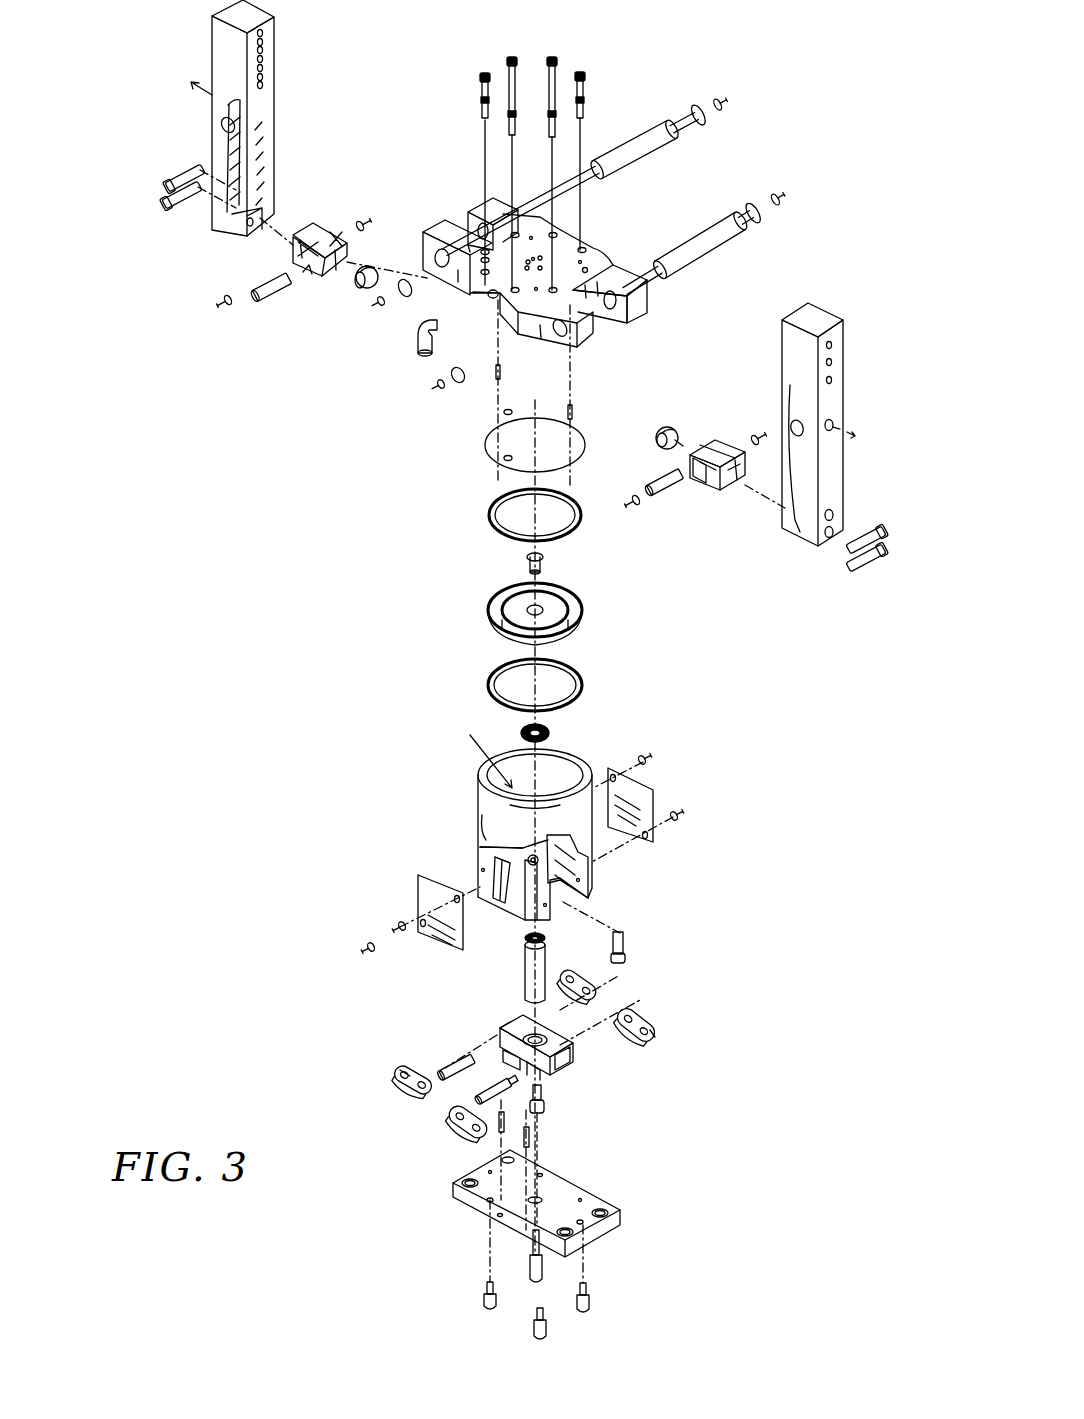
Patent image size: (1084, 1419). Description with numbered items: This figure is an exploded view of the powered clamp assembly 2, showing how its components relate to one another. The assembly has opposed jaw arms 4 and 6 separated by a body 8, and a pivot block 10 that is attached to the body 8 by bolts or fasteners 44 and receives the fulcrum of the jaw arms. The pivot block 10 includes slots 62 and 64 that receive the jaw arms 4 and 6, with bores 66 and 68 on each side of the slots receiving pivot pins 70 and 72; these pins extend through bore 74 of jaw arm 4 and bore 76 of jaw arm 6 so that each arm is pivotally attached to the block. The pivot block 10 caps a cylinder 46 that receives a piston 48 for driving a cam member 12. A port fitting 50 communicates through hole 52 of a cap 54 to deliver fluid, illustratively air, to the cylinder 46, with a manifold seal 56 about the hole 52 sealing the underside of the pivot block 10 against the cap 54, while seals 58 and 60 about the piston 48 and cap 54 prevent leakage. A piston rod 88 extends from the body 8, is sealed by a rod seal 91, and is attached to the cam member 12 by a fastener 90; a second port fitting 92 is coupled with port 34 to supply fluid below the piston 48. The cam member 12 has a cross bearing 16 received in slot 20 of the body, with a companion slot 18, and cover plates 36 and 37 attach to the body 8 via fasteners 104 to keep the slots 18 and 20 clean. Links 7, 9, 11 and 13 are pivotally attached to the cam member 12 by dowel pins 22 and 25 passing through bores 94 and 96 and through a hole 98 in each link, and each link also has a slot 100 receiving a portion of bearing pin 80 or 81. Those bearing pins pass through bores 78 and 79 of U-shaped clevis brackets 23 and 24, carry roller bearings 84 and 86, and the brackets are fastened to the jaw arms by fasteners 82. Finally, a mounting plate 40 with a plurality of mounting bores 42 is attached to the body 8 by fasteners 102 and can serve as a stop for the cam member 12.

The powered clamp assembly 2 is at (492, 298).
The jaw arm 4 is at (267, 92).
The jaw arm 6 is at (835, 340).
The link 7 is at (411, 1066).
The body 8 is at (580, 762).
The link 9 is at (455, 1132).
The pivot block 10 is at (575, 247).
The link 11 is at (578, 975).
The cam member 12 is at (592, 1066).
The link 13 is at (655, 1037).
The cross bearing 16 is at (548, 1036).
The slot 18 is at (495, 862).
The slot 20 is at (540, 848).
The dowel pin 22 is at (455, 1064).
The clevis bracket 23 is at (320, 270).
The clevis bracket 24 is at (730, 450).
The dowel pin 25 is at (488, 1090).
The port 34 is at (485, 848).
The cover plate 36 is at (423, 893).
The cover plate 37 is at (645, 800).
The mounting plate 40 is at (560, 1200).
The mounting bores 42 is at (508, 1153).
The fasteners 44 is at (508, 62).
The cylinder 46 is at (475, 749).
The piston 48 is at (580, 610).
The port fitting 50 is at (415, 342).
The hole 52 is at (495, 462).
The cap 54 is at (535, 440).
The manifold seal 56 is at (512, 407).
The seal 58 is at (492, 519).
The seal 60 is at (575, 676).
The slot 62 is at (462, 225).
The slot 64 is at (616, 338).
The bore 66 is at (430, 256).
The bore 68 is at (556, 338).
The pivot pin 70 is at (656, 133).
The pivot pin 72 is at (735, 250).
The bore 74 is at (228, 128).
The bore 76 is at (794, 426).
The bore 78 is at (309, 268).
The bore 79 is at (698, 458).
The bearing pin 80 is at (272, 296).
The bearing pin 81 is at (682, 494).
The fasteners 82 is at (190, 186).
The roller bearing 84 is at (367, 268).
The roller bearing 86 is at (668, 424).
The piston rod 88 is at (528, 962).
The fastener 90 is at (548, 1100).
The rod seal 91 is at (550, 730).
The port fitting 92 is at (625, 940).
The bore 94 is at (497, 1043).
The bore 96 is at (532, 1067).
The hole 98 is at (600, 985).
The slot 100 is at (397, 1082).
The fasteners 102 is at (487, 1294).
The fasteners 104 is at (645, 757).